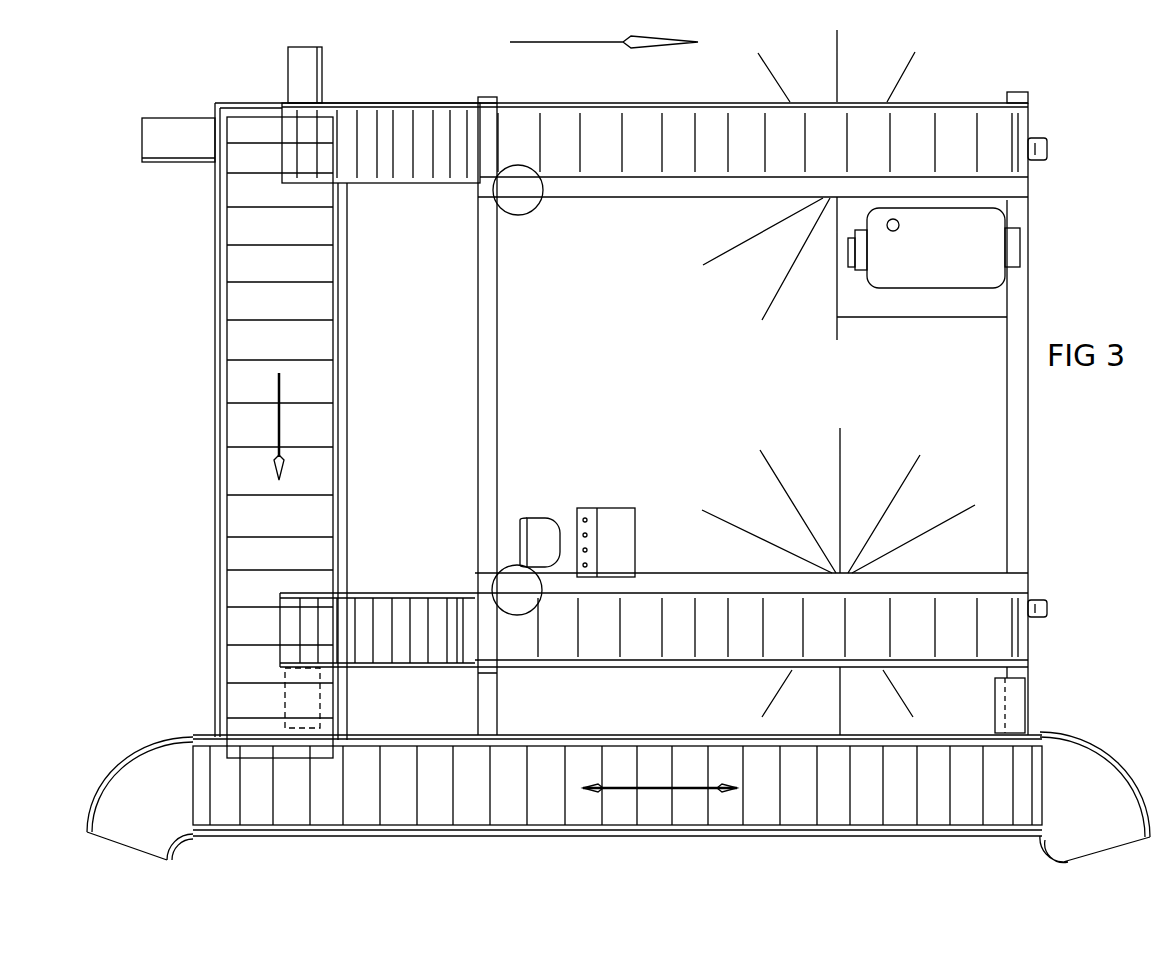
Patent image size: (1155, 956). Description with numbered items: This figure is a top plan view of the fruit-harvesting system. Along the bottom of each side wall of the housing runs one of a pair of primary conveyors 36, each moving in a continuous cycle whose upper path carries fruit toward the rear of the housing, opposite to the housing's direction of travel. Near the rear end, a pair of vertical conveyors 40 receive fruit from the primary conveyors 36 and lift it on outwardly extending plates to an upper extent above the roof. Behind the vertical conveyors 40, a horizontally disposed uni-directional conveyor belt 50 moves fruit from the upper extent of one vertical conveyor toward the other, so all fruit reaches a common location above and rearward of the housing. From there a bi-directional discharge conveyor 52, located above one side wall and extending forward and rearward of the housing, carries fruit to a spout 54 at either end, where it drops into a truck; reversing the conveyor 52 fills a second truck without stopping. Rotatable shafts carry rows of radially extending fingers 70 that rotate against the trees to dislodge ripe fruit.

The primary conveyor 36 is at (942, 132).
The vertical conveyor 40 is at (397, 140).
The uni-directional conveyor belt 50 is at (247, 265).
The bi-directional discharge conveyor 52 is at (915, 835).
The spout 54 is at (167, 860).
The radially extending fingers 70 is at (893, 85).